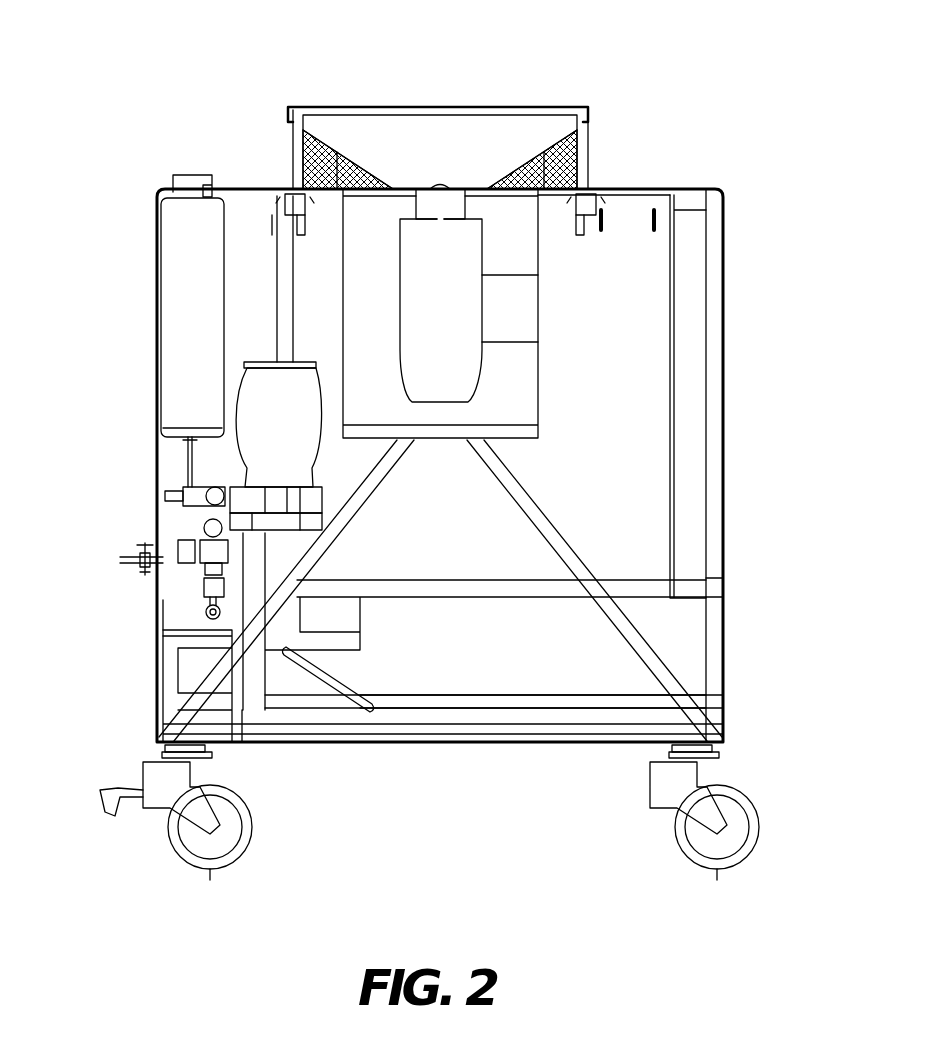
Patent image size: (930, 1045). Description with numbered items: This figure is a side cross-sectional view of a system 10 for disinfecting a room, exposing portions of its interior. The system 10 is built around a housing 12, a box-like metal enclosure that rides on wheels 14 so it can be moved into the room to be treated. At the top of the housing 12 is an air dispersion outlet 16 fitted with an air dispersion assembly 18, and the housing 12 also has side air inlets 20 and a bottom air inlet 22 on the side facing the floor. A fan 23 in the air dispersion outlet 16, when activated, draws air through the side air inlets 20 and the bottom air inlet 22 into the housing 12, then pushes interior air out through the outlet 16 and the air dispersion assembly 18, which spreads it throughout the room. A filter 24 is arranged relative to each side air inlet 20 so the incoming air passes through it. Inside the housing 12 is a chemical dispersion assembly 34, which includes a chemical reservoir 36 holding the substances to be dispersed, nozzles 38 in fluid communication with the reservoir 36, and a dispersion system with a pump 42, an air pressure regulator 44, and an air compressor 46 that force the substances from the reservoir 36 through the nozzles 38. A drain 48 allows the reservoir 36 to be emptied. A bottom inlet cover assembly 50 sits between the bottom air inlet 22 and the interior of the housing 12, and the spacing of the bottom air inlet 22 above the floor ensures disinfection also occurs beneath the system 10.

The system 10 is at (479, 385).
The housing 12 is at (723, 250).
The wheels 14 is at (205, 885).
The air dispersion outlet 16 is at (443, 108).
The air dispersion assembly 18 is at (437, 135).
The side air inlets 20 is at (740, 428).
The bottom air inlet 22 is at (470, 780).
The fan 23 is at (515, 302).
The filter 24 is at (455, 536).
The chemical dispersion assembly 34 is at (220, 423).
The chemical reservoirs 36 is at (178, 336).
The nozzles 38 is at (300, 217).
The pump 42 is at (183, 497).
The air pressure regulator 44 is at (205, 618).
The air compressor 46 is at (300, 447).
The drain 48 is at (138, 563).
The bottom inlet cover assembly 50 is at (610, 715).